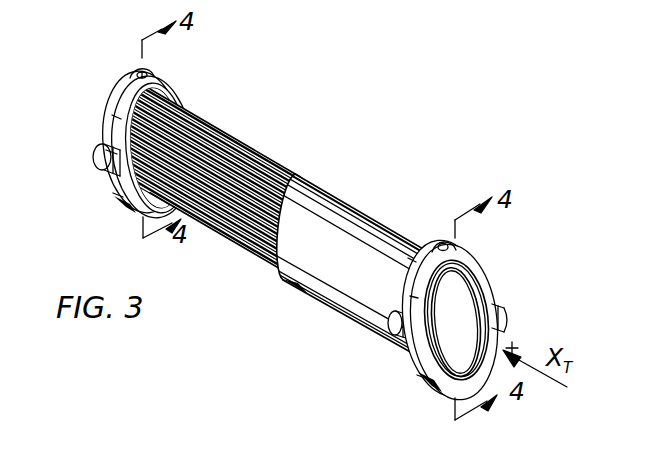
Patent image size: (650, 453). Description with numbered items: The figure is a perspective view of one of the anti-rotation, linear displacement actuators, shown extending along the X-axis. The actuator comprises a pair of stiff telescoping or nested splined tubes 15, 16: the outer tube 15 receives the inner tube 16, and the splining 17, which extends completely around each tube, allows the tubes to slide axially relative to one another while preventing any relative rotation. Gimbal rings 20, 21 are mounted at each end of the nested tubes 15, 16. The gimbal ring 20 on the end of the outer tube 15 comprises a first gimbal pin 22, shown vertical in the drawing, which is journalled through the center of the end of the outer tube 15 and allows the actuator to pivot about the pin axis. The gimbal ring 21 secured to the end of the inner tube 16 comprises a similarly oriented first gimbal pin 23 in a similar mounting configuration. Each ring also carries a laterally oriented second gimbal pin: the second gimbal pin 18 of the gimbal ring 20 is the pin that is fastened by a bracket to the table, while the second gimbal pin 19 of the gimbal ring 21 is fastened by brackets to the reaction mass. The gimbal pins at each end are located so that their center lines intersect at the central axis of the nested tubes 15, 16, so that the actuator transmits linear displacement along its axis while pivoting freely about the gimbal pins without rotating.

The outer splined tube 15 is at (320, 208).
The inner splined tube 16 is at (240, 142).
The splining 17 is at (262, 161).
The second gimbal pin 18 is at (512, 290).
The second gimbal pin 19 is at (94, 156).
The gimbal ring 20 is at (468, 295).
The gimbal ring 21 is at (150, 138).
The first gimbal pin 22 is at (441, 244).
The first gimbal pin 23 is at (133, 76).